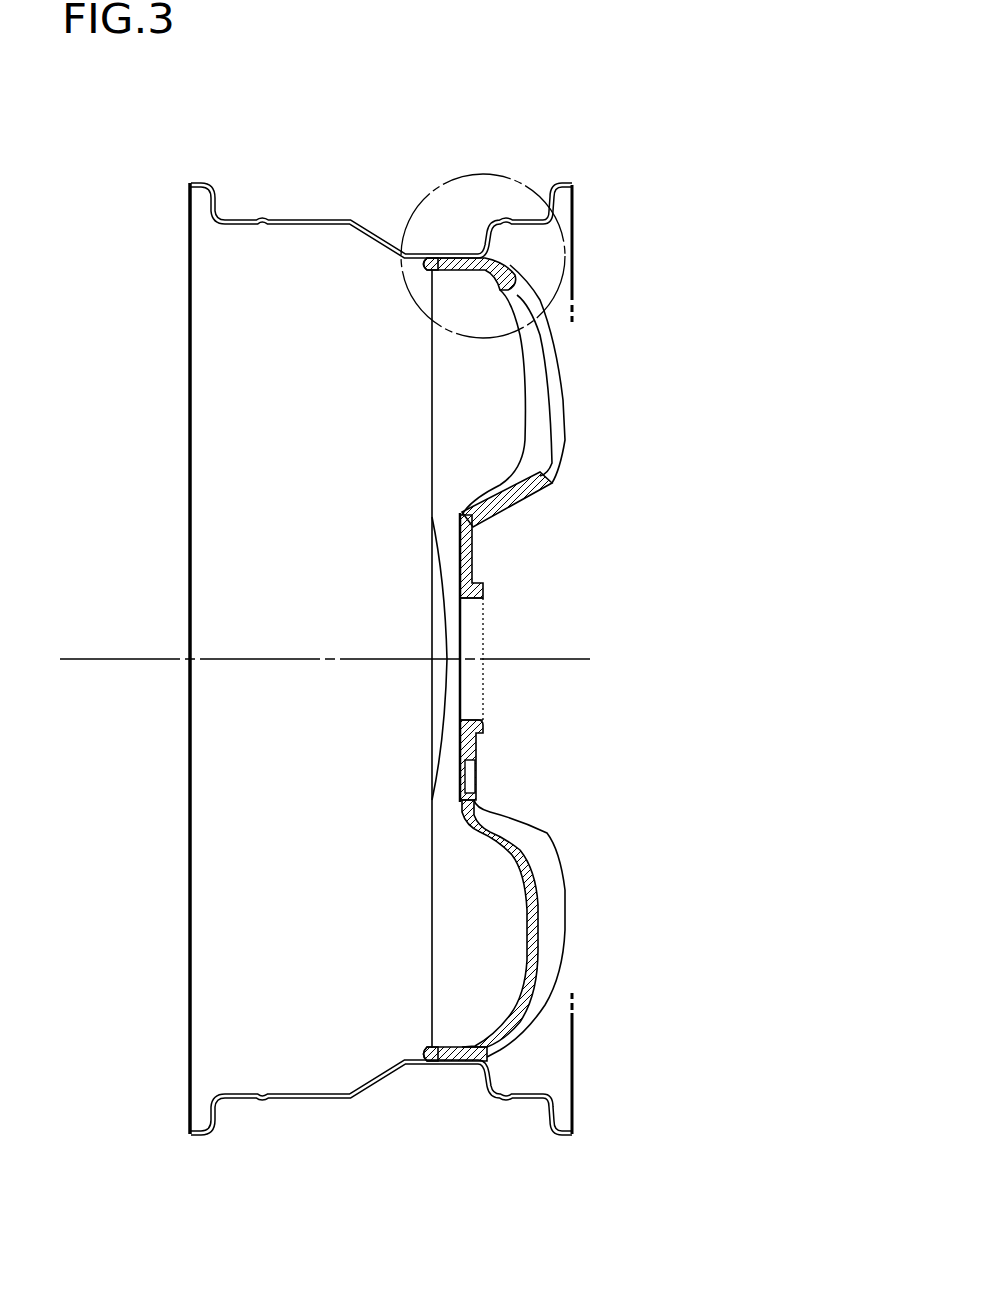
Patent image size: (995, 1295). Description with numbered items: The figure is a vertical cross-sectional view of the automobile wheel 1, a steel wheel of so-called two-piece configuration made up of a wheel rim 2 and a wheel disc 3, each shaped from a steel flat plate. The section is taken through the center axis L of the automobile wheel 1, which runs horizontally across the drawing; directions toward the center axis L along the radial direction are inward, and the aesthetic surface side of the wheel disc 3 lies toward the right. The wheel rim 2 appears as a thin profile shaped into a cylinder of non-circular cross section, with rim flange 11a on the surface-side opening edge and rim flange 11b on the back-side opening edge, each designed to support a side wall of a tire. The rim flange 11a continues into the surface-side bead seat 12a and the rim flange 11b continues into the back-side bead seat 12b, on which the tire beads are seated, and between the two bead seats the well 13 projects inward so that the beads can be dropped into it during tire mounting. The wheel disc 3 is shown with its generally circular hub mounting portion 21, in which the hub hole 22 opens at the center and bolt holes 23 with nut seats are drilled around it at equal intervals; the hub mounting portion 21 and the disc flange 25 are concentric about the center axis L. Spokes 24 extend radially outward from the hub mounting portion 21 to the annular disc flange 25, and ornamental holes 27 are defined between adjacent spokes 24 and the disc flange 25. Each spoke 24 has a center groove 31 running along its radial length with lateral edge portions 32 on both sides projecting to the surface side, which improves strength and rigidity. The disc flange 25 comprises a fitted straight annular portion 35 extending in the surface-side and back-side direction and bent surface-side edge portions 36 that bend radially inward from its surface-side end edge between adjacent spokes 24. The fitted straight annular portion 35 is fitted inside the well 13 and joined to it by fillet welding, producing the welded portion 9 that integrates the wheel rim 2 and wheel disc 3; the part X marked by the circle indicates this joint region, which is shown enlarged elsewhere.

The automobile wheel 1 is at (630, 187).
The wheel rim 2 is at (390, 1078).
The wheel disc 3 is at (537, 495).
The welded portion 9 is at (425, 262).
The rim flange 11a is at (563, 1138).
The rim flange 11b is at (196, 1133).
The surface-side bead seat 12a is at (517, 1100).
The back-side bead seat 12b is at (238, 1098).
The well 13 is at (437, 272).
The hub mounting portion 21 is at (457, 530).
The hub hole 22 is at (472, 633).
The bolt hole 23 is at (472, 777).
The spoke 24 is at (555, 898).
The disc flange 25 is at (450, 381).
The ornamental hole 27 is at (560, 423).
The center groove 31 is at (530, 963).
The lateral edge portion 32 is at (550, 838).
The fitted straight annular portion 35 is at (448, 264).
The bent surface-side edge portion 36 is at (508, 279).
The center axis L is at (125, 658).
The part X is at (442, 183).